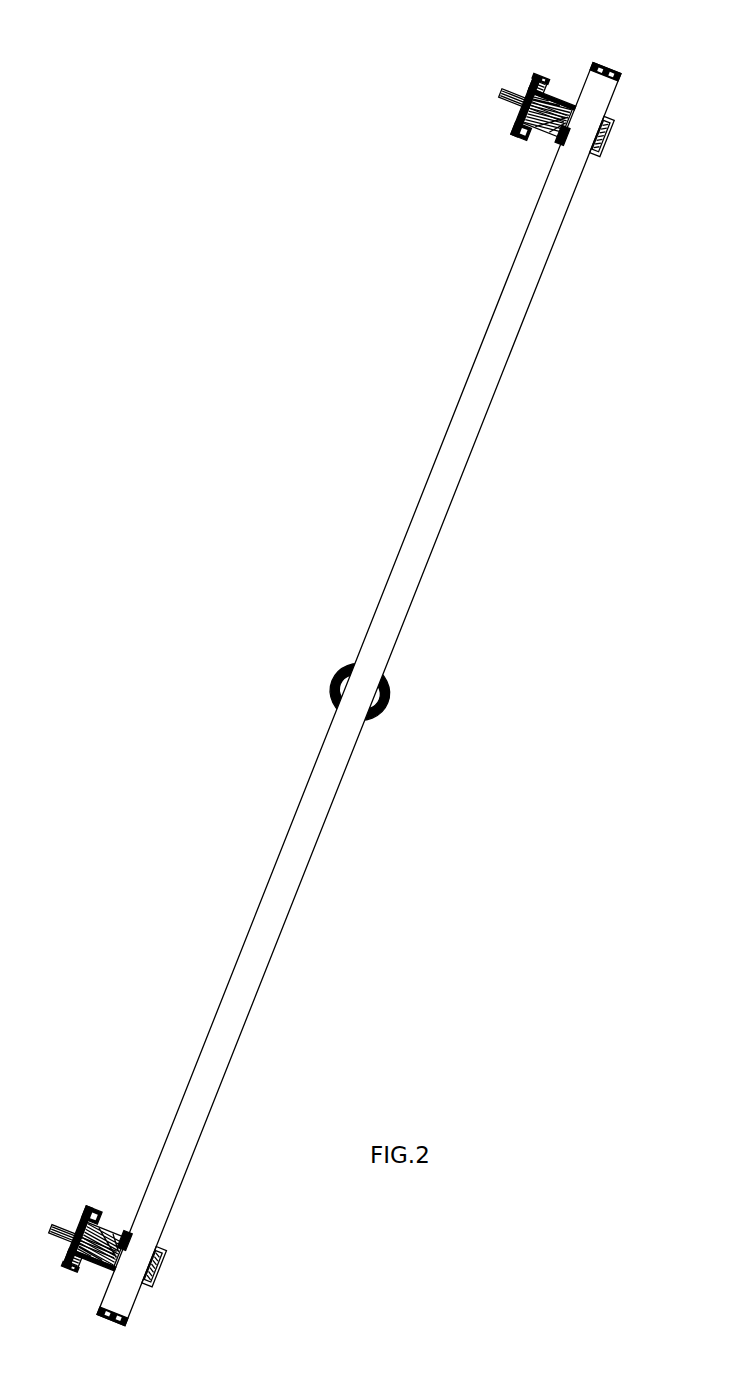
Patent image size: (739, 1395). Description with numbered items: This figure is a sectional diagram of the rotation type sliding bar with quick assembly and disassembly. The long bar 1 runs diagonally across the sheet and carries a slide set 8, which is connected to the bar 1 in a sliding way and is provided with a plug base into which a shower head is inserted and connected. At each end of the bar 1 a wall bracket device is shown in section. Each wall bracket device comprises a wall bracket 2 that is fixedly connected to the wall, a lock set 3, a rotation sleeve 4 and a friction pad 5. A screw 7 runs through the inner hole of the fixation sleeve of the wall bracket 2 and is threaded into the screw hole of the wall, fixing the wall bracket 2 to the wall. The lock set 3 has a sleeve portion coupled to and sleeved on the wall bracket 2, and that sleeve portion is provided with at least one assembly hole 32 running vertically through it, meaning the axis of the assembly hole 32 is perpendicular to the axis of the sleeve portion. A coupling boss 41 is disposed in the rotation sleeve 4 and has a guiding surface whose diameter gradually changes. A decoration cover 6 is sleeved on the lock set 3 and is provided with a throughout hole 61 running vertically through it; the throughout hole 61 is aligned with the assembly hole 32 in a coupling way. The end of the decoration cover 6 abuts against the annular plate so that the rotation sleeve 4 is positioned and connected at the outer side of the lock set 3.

The bar 1 is at (445, 408).
The wall bracket 2 is at (520, 125).
The lock set 3 is at (548, 138).
The rotation sleeve 4 is at (543, 82).
The coupling boss 41 is at (538, 88).
The friction pad 5 is at (555, 143).
The decoration cover 6 is at (560, 100).
The throughout hole 61 is at (607, 117).
The screw 7 is at (513, 98).
The slide set 8 is at (335, 682).
The assembly hole 32 is at (608, 132).